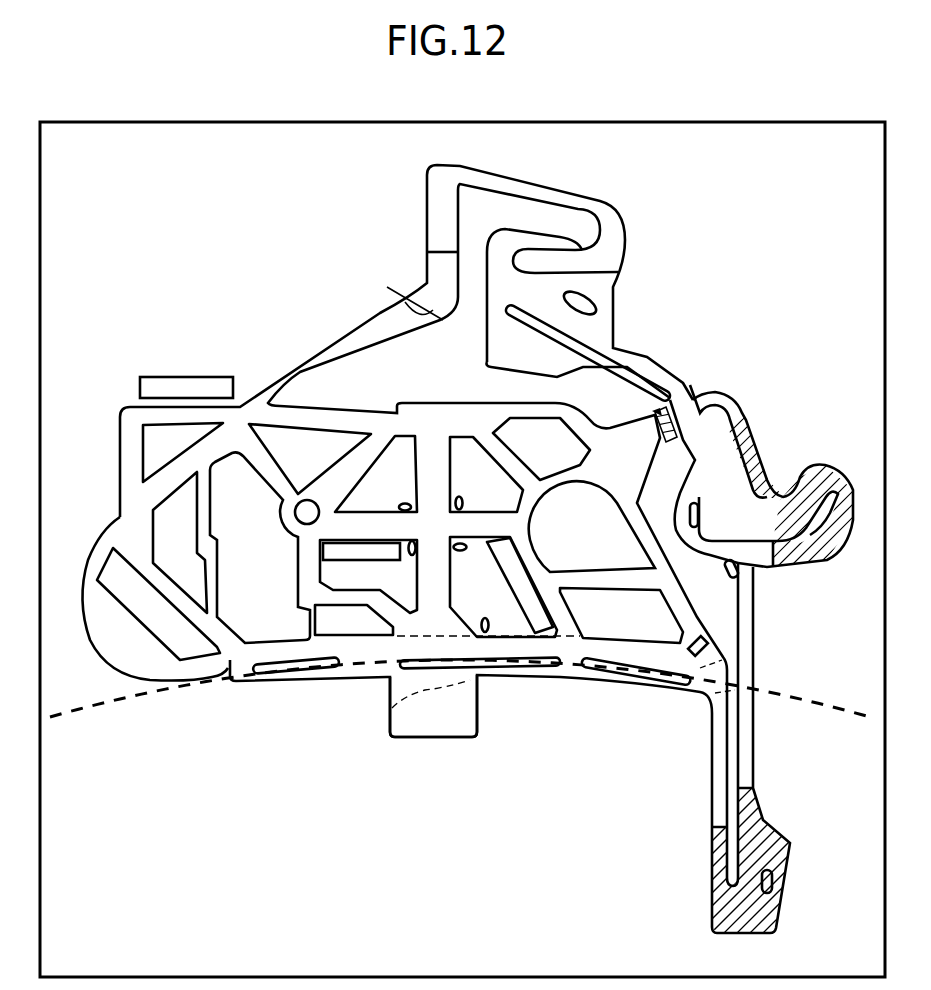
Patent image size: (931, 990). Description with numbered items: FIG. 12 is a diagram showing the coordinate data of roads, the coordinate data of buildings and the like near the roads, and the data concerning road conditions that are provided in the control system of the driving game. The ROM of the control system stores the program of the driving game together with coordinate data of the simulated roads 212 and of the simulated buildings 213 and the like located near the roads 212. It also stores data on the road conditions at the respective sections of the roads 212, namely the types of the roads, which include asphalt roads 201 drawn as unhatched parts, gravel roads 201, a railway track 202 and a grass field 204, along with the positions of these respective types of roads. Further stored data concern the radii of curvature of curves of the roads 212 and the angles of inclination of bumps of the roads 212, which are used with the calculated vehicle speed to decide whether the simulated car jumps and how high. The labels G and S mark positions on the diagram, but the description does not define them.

The asphalt roads / gravel roads 201 is at (327, 353).
The railway track 202 is at (392, 707).
The grass field 204 is at (743, 430).
The simulated roads 212 is at (614, 207).
The simulated buildings 213 is at (177, 388).
The gate position G is at (442, 250).
The section line S is at (403, 292).